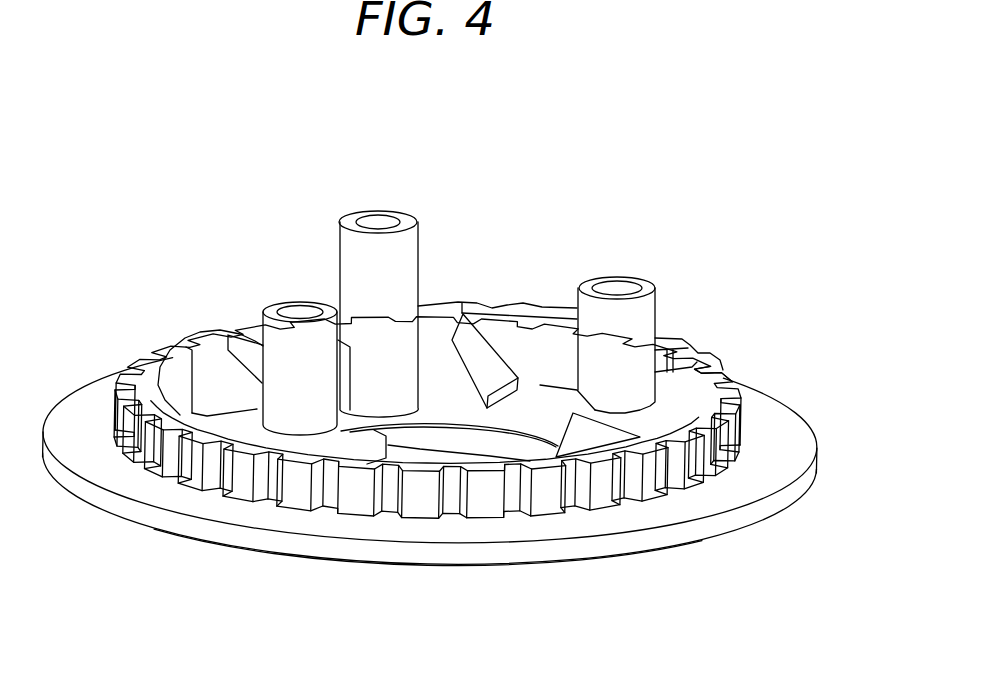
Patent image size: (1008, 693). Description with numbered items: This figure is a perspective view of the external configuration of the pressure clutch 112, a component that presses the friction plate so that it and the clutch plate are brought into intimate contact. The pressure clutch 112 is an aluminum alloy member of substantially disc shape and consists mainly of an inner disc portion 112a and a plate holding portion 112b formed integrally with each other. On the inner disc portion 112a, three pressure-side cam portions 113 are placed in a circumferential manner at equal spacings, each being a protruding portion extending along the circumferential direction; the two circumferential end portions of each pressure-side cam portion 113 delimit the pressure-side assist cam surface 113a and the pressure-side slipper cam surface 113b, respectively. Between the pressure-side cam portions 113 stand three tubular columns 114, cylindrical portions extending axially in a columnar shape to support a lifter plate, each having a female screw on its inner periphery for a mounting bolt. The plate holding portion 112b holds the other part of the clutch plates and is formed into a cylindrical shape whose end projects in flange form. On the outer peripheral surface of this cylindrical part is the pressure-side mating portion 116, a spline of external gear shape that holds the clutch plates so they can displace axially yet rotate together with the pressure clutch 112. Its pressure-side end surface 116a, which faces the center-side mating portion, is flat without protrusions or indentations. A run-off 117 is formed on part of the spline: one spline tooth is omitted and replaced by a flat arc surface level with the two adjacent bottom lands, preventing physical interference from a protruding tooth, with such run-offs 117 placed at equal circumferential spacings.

The pressure clutch 112 is at (125, 161).
The inner disc portion 112a is at (538, 390).
The plate holding portion 112b is at (377, 562).
The pressure-side cam portion 113 is at (678, 390).
The pressure-side assist cam surface 113a is at (228, 333).
The pressure-side slipper cam surface 113b is at (479, 355).
The tubular column 114 is at (375, 212).
The pressure-side mating portion 116 is at (744, 408).
The pressure-side end surface 116a is at (723, 370).
The run-off 117 is at (515, 493).